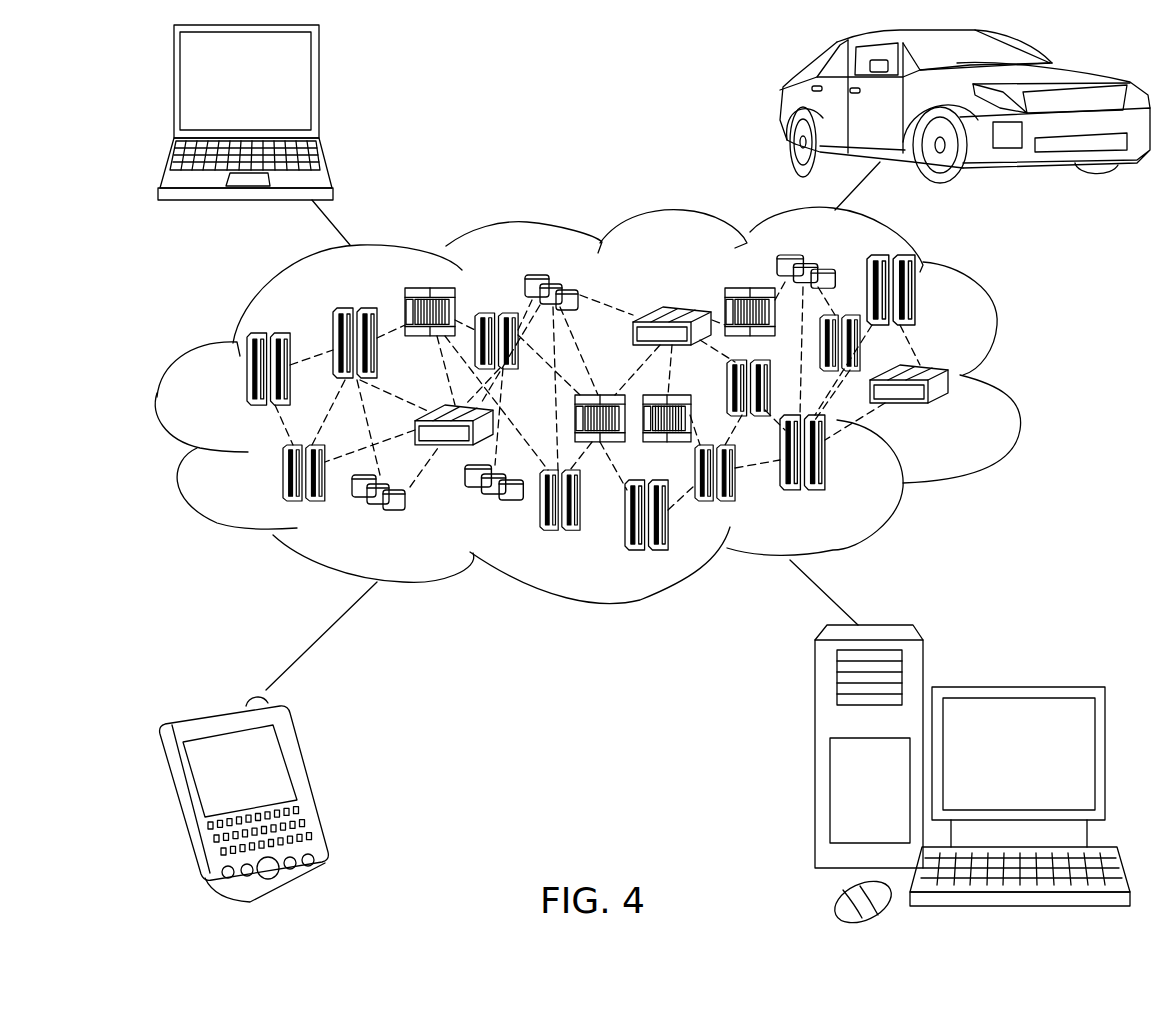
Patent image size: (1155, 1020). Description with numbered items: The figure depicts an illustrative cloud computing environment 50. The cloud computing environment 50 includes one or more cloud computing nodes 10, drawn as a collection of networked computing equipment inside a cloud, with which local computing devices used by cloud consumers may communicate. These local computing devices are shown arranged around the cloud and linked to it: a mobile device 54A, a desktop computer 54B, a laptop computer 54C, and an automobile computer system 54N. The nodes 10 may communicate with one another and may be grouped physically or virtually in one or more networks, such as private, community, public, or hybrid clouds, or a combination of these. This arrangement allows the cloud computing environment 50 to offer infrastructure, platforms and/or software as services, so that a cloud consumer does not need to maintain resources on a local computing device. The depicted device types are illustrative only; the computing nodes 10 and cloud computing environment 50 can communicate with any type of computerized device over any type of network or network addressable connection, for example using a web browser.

The cloud computing node 10 is at (955, 412).
The cloud computing environment 50 is at (1017, 380).
The mobile device 54A is at (308, 787).
The desktop computer 54B is at (1015, 688).
The laptop computer 54C is at (320, 92).
The automobile computer system 54N is at (786, 106).